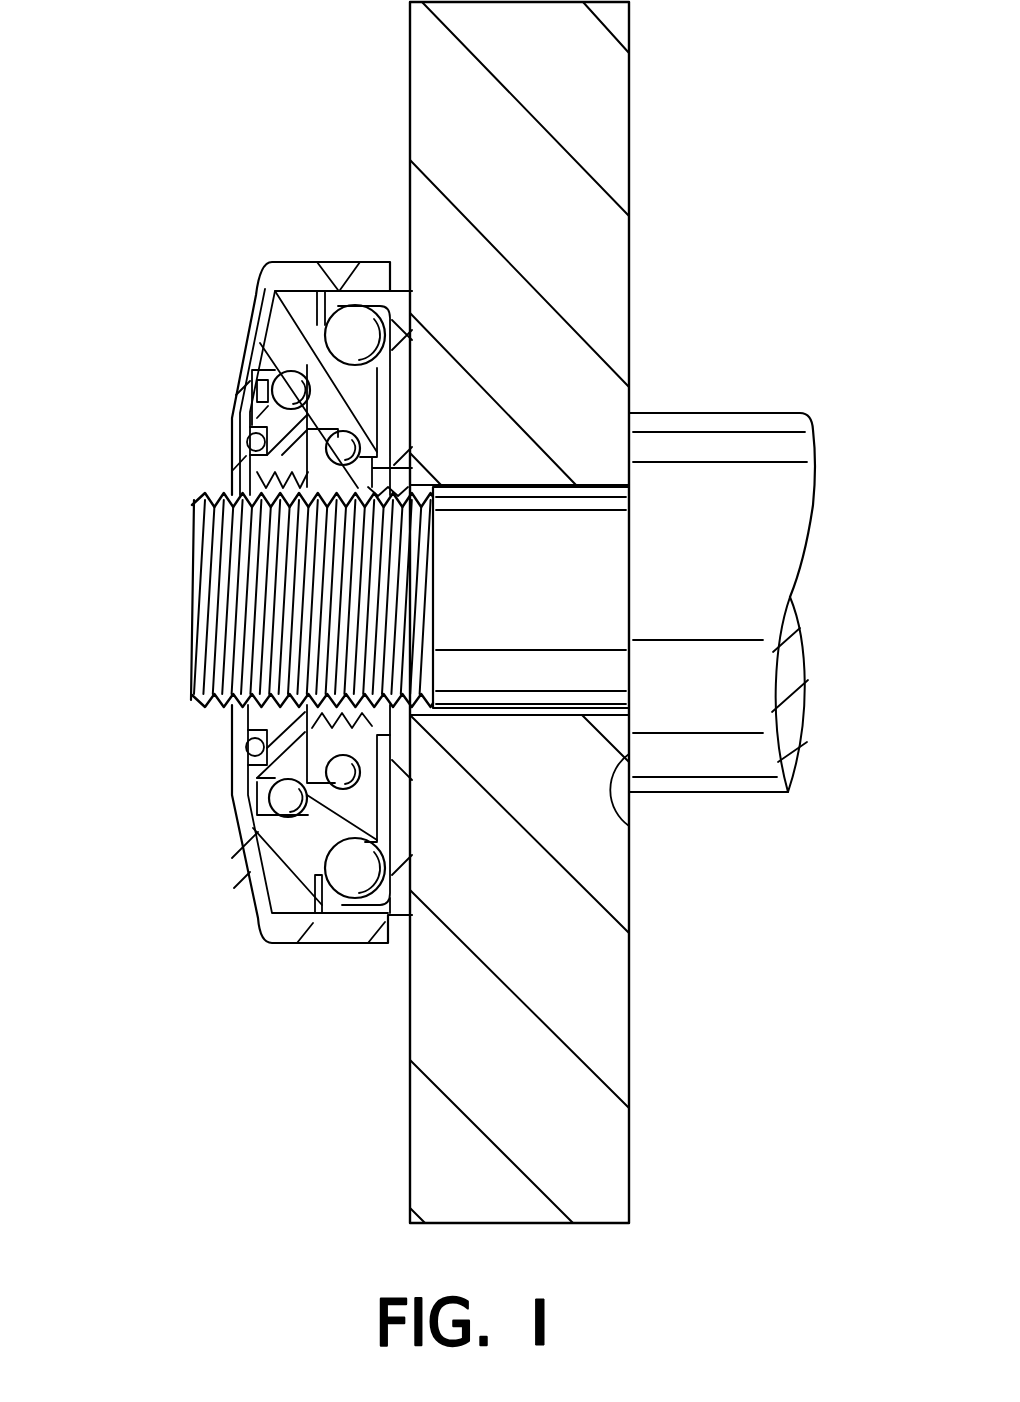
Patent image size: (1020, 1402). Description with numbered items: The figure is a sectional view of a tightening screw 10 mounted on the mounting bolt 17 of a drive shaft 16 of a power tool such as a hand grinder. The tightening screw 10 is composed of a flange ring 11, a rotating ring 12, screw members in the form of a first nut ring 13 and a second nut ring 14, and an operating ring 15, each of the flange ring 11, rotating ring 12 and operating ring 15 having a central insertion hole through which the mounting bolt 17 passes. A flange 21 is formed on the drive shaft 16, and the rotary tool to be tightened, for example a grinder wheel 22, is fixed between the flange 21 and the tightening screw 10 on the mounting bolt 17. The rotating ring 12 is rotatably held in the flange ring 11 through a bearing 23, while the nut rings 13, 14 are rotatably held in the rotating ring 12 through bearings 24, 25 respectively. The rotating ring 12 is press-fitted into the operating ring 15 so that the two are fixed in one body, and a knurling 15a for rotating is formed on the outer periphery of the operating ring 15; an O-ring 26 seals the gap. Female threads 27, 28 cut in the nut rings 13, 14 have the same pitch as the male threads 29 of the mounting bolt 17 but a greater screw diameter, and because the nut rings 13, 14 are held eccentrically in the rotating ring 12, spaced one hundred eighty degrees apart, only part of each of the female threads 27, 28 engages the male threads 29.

The tightening screw 10 is at (150, 293).
The flange ring 11 is at (413, 387).
The rotating ring 12 is at (282, 315).
The first nut ring 13 is at (249, 452).
The second nut ring 14 is at (262, 404).
The operating ring 15 is at (246, 840).
The knurling 15a is at (340, 948).
The drive shaft 16 is at (743, 795).
The mounting bolt 17 is at (228, 608).
The flange 21 is at (631, 833).
The plate 22 is at (612, 1075).
The bearing 23 is at (335, 905).
The bearing 24 is at (307, 852).
The bearing 25 is at (280, 802).
The O-ring 26 is at (248, 748).
The female threads 27 is at (290, 700).
The female threads 28 is at (272, 503).
The male threads 29 is at (240, 492).